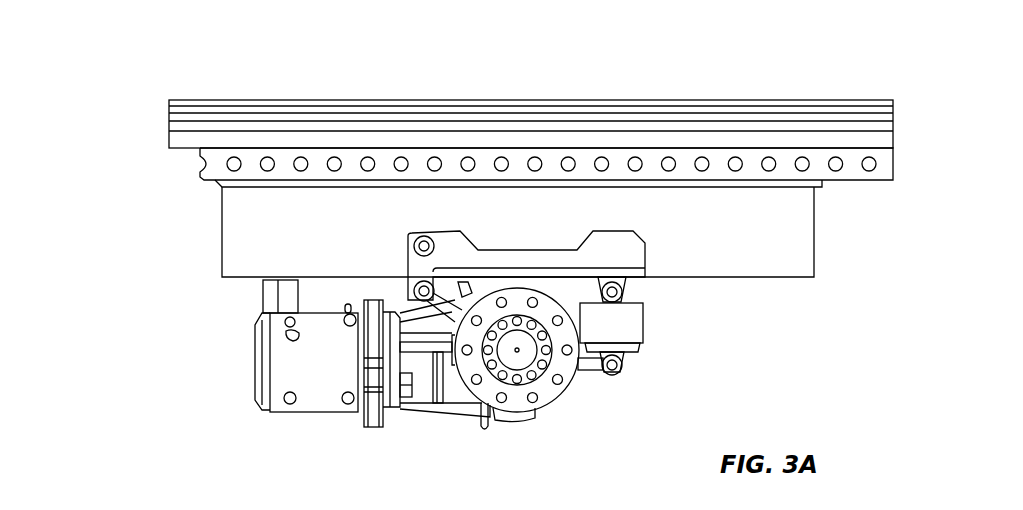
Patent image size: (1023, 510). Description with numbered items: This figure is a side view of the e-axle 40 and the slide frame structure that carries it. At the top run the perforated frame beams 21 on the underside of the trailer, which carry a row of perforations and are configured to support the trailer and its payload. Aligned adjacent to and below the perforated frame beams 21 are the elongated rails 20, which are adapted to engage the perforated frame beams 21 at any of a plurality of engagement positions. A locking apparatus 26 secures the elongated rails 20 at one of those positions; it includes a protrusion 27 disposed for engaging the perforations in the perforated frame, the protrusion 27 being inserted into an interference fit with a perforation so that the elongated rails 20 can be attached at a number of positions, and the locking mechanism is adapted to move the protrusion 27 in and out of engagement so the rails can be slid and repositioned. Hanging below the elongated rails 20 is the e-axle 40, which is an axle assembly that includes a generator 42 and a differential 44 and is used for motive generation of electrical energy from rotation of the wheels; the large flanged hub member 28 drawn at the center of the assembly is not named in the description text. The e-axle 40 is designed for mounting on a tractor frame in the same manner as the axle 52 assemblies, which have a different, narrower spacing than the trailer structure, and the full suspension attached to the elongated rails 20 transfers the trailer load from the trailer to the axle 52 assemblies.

The elongated rails 20 is at (814, 250).
The perforated frame beams 21 is at (893, 165).
The locking apparatus 26 is at (823, 182).
The protrusion 27 is at (840, 100).
The drive wheel hub 28 is at (562, 408).
The e-axle 40 is at (207, 427).
The generator 42 is at (332, 412).
The differential 44 is at (430, 410).
The axle 52 is at (520, 357).